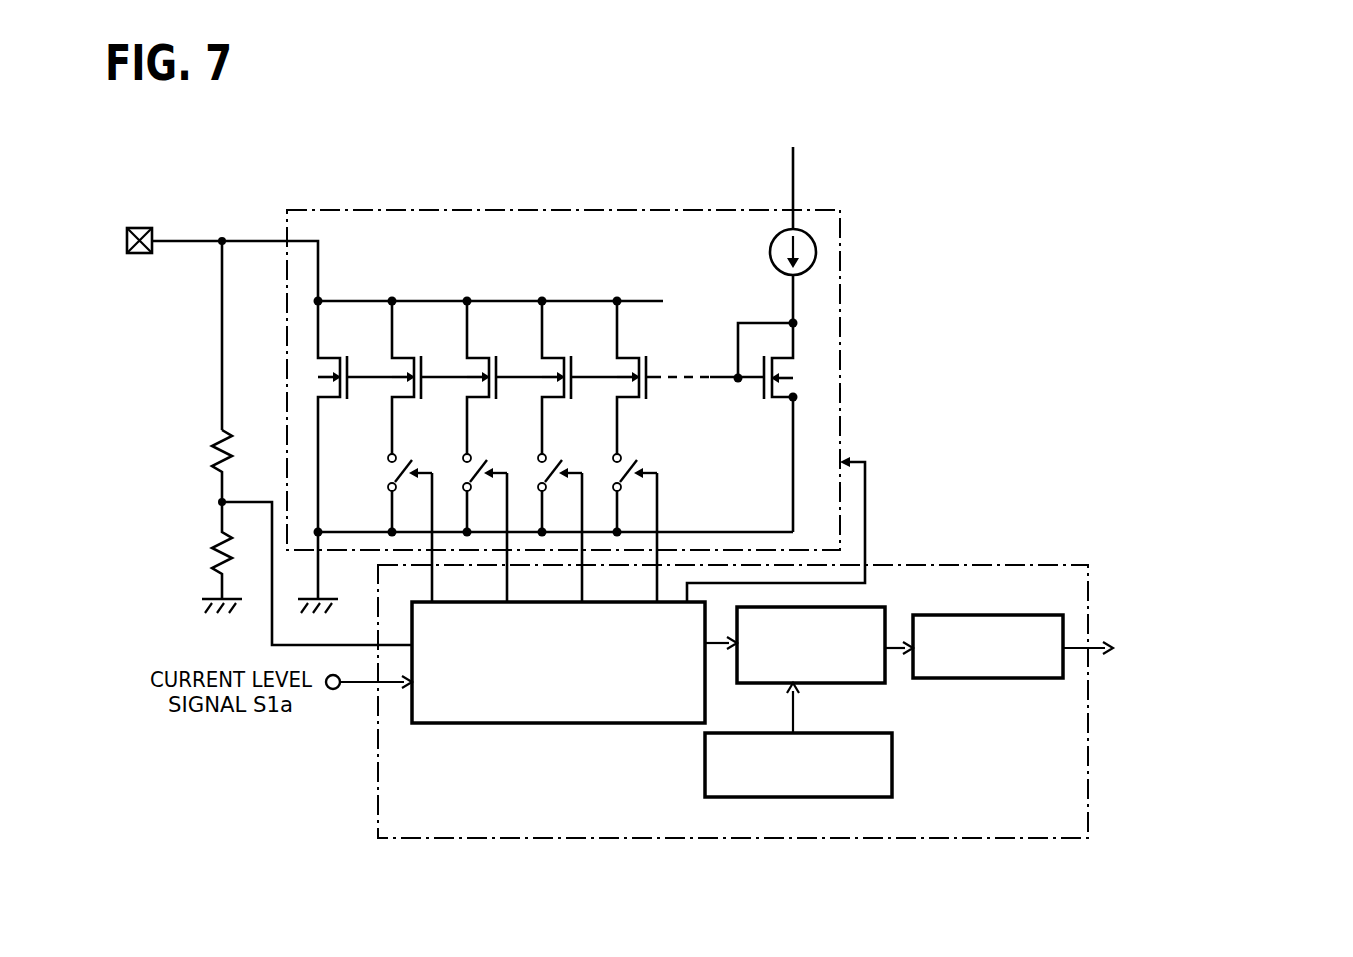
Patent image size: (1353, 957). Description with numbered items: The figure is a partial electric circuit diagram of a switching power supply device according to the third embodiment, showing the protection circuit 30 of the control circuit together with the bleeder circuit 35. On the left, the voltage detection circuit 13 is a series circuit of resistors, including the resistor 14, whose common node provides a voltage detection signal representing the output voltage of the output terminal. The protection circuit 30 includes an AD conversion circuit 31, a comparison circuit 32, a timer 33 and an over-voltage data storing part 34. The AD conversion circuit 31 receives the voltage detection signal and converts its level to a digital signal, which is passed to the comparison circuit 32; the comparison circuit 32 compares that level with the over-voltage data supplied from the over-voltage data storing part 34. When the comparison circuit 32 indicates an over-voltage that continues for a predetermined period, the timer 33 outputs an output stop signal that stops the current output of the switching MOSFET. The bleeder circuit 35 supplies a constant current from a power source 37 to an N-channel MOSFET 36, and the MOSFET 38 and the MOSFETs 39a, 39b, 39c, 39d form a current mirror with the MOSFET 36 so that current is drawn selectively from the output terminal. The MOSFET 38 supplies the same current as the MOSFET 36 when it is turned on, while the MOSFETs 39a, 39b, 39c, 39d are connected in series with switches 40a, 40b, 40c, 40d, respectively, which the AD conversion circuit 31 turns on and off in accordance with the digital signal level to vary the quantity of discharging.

The voltage detection circuit 13 is at (212, 453).
The resistor 14 is at (212, 546).
The protection circuit 30 is at (864, 647).
The AD conversion circuit 31 is at (517, 728).
The comparison circuit 32 is at (888, 683).
The timer 33 is at (1028, 680).
The over-voltage data storing part 34 is at (703, 777).
The bleeder circuit 35 is at (608, 374).
The N-channel MOSFET 36 is at (767, 405).
The power source 37 is at (770, 250).
The MOSFET 38 is at (365, 341).
The MOSFET 39a is at (443, 337).
The MOSFET 39b is at (517, 337).
The MOSFET 39c is at (587, 340).
The MOSFET 39d is at (673, 340).
The switch 40a is at (382, 472).
The switch 40b is at (455, 470).
The switch 40c is at (533, 470).
The switch 40d is at (605, 472).